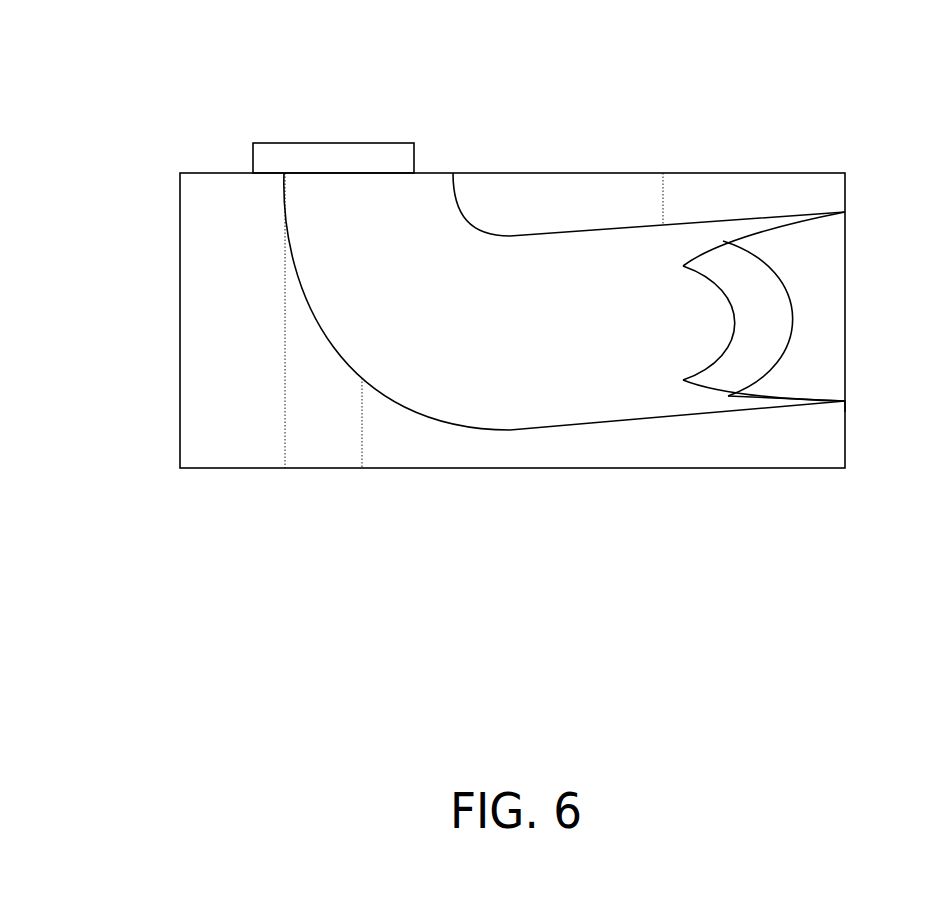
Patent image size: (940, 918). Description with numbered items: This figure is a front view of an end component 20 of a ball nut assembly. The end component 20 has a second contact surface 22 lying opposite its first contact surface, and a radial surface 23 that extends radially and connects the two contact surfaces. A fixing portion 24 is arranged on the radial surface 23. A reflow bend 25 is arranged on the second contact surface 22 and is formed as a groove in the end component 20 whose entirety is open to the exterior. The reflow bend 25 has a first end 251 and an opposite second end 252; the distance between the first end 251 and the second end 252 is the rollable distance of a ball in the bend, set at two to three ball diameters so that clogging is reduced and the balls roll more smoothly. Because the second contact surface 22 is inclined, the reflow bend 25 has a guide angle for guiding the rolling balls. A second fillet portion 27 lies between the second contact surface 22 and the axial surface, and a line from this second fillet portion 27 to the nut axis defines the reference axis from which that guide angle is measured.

The end component 20 is at (102, 68).
The second contact surface 22 is at (745, 443).
The radial surface 23 is at (753, 173).
The fixing portion 24 is at (374, 157).
The reflow bend 25 is at (583, 323).
The first end 251 is at (283, 173).
The second end 252 is at (845, 401).
The second fillet portion 27 is at (228, 322).